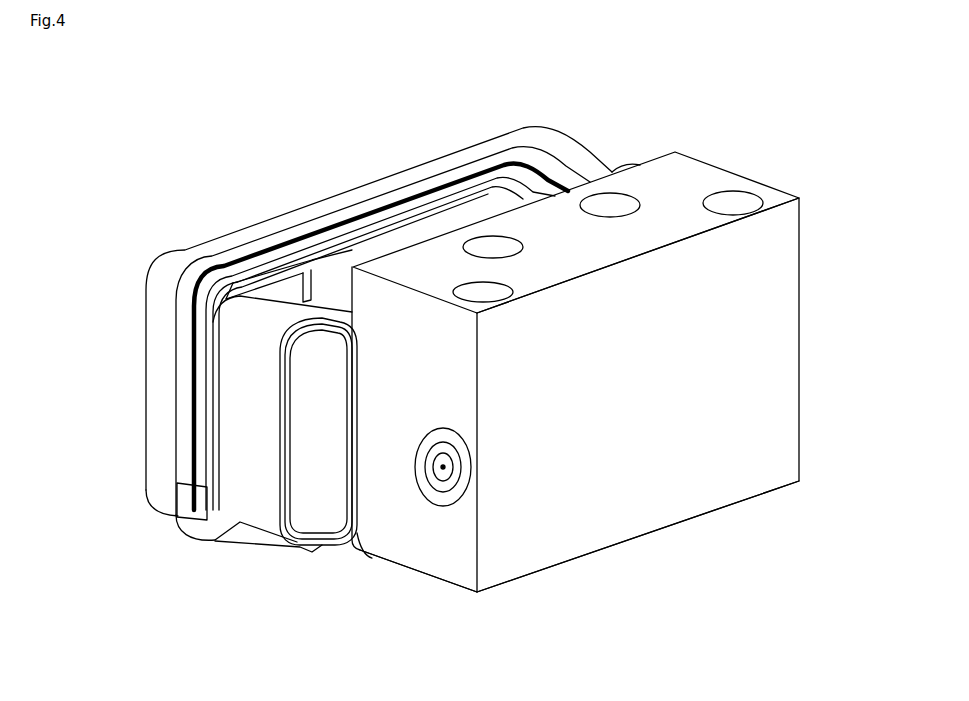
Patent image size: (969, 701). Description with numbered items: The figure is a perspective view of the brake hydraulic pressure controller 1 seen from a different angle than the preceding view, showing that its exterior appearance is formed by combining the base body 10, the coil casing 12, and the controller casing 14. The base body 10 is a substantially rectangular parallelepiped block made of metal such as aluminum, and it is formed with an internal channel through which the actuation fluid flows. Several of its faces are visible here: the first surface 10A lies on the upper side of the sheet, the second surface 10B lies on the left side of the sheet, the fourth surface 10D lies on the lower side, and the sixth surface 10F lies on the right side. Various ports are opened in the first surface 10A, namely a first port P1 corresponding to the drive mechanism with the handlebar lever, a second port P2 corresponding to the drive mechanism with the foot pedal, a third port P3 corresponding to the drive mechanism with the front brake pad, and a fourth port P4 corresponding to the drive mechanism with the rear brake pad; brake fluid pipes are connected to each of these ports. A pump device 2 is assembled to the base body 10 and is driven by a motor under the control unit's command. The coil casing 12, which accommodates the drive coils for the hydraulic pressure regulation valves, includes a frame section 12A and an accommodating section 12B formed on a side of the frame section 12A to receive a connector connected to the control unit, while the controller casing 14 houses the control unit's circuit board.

The brake hydraulic pressure controller 1 is at (268, 137).
The pump device 2 is at (440, 477).
The base body 10 is at (800, 352).
The first surface 10A is at (678, 170).
The second surface 10B is at (453, 578).
The fourth surface 10D is at (402, 577).
The sixth surface 10F is at (778, 280).
The coil casing 12 is at (246, 510).
The frame section 12A is at (503, 199).
The accommodating section 12B is at (325, 512).
The controller casing 14 is at (251, 225).
The first port P1 is at (736, 202).
The second port P2 is at (468, 294).
The third port P3 is at (612, 207).
The fourth port P4 is at (479, 248).